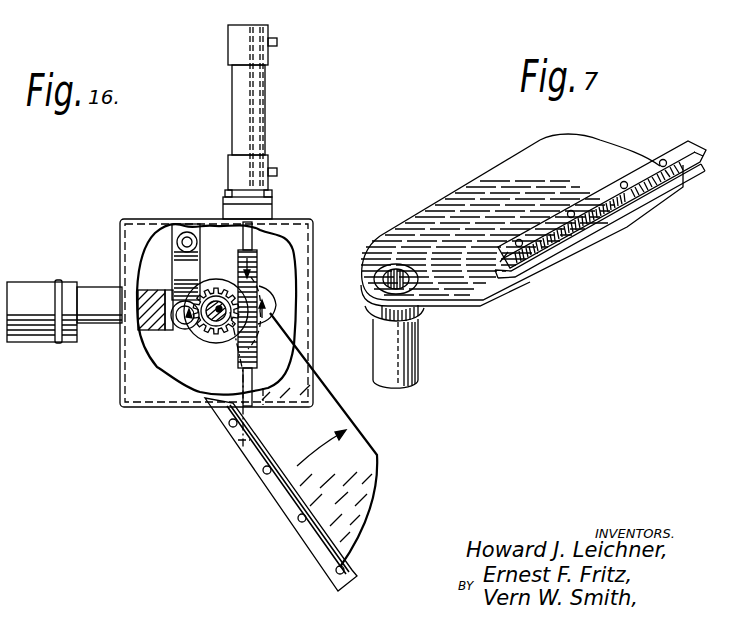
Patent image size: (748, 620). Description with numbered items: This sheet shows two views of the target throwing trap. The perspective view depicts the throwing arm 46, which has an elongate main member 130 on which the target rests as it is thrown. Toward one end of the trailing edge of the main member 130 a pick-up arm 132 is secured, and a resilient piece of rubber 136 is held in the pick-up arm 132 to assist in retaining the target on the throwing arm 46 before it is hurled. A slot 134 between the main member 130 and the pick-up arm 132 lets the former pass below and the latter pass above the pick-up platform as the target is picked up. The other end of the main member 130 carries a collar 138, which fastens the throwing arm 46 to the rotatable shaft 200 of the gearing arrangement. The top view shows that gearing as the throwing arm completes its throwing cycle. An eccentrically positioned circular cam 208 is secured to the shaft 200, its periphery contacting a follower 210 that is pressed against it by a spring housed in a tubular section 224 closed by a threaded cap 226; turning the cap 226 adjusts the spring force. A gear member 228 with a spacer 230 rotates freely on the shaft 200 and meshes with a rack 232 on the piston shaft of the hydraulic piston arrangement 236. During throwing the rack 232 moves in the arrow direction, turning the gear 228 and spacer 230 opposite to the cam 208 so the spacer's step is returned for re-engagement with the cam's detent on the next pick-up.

In FIG. 16, the hydraulic piston arrangement 236 is at (272, 116).
In FIG. 16, the cap 226 is at (26, 282).
In FIG. 16, the tubular section 224 is at (94, 290).
In FIG. 16, the gear member 228 is at (208, 334).
In FIG. 16, the rotatable shaft 200 is at (214, 298).
In FIG. 16, the follower 210 is at (176, 330).
In FIG. 16, the spacer 230 is at (190, 327).
In FIG. 16, the rack 232 is at (258, 262).
In FIG. 16, the eccentrically positioned circular cam 208 is at (263, 312).
In FIG. 16, the throwing arm 46 is at (360, 491).
In FIG. 7, the throwing arm 46 is at (622, 236).
In FIG. 7, the elongate main member 130 is at (468, 193).
In FIG. 7, the pick-up arm 132 is at (681, 140).
In FIG. 7, the slot 134 is at (533, 277).
In FIG. 7, the resilient piece of rubber 136 is at (642, 161).
In FIG. 7, the collar 138 is at (405, 354).